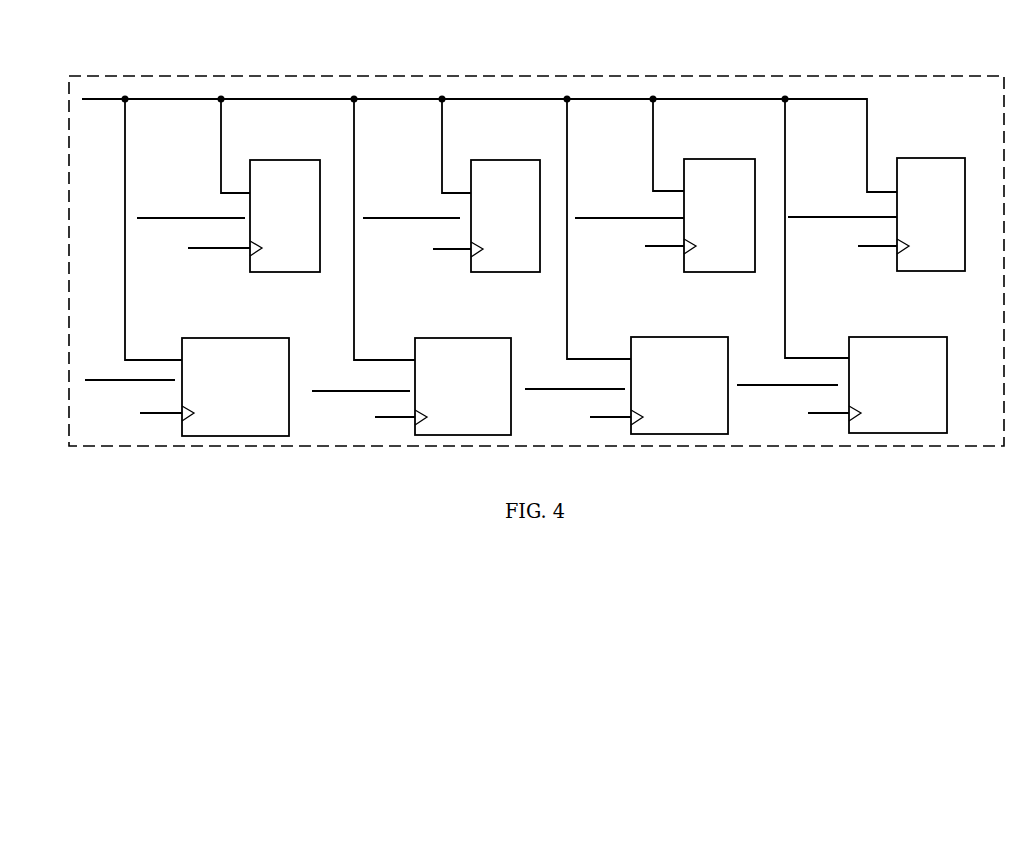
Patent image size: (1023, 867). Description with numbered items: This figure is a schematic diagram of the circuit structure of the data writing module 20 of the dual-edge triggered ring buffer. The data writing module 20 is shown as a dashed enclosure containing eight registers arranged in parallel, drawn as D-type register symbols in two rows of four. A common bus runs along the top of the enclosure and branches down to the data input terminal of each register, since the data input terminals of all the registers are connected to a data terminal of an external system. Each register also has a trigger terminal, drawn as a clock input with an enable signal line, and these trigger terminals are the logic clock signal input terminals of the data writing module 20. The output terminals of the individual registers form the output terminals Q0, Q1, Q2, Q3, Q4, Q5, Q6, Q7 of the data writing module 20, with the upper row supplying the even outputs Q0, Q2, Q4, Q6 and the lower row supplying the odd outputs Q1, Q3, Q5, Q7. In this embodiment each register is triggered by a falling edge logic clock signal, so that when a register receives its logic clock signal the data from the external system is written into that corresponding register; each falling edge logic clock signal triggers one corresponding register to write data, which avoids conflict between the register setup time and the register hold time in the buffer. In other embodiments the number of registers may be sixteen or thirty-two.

The data writing module 20 is at (507, 75).
The output terminal Q0 is at (346, 187).
The output terminal Q1 is at (318, 368).
The output terminal Q2 is at (566, 187).
The output terminal Q3 is at (540, 363).
The output terminal Q4 is at (781, 185).
The output terminal Q5 is at (756, 355).
The output terminal Q6 is at (991, 185).
The output terminal Q7 is at (972, 356).